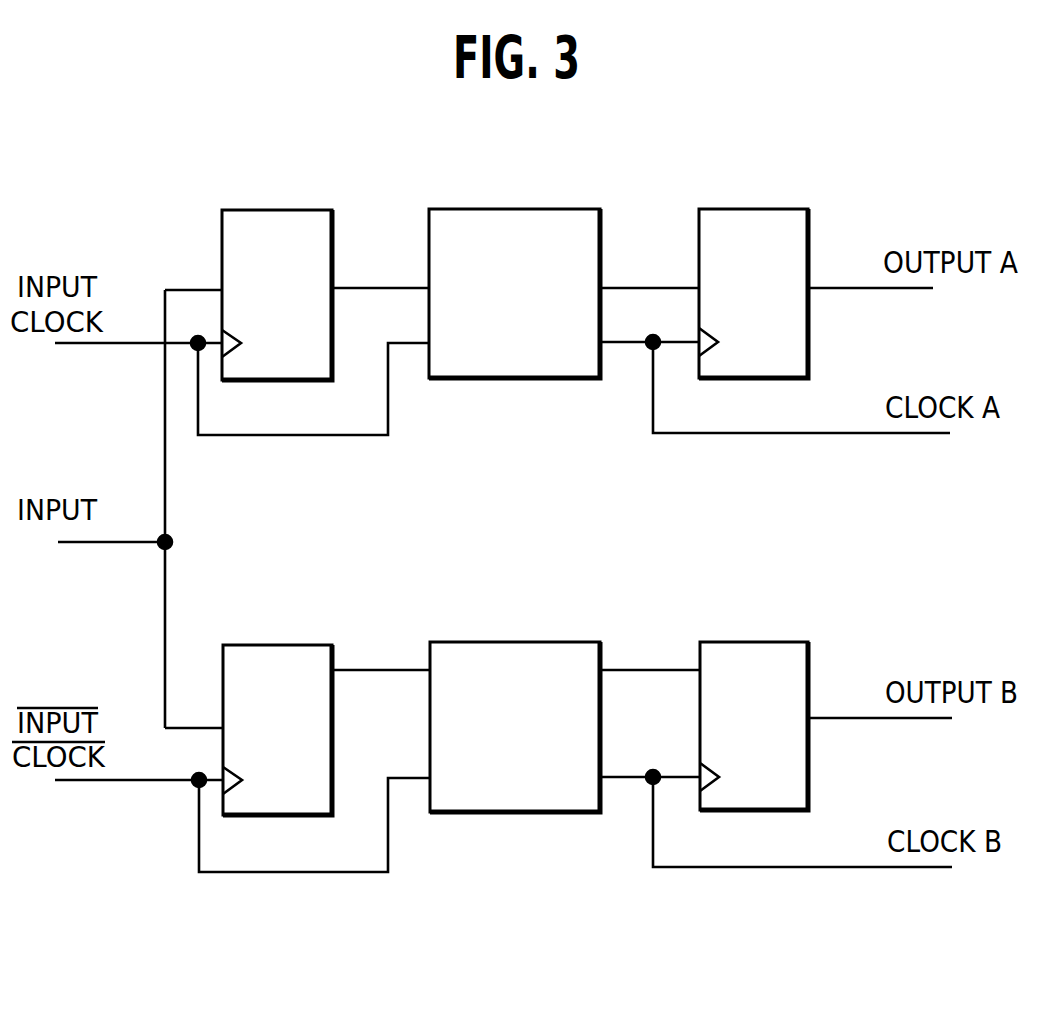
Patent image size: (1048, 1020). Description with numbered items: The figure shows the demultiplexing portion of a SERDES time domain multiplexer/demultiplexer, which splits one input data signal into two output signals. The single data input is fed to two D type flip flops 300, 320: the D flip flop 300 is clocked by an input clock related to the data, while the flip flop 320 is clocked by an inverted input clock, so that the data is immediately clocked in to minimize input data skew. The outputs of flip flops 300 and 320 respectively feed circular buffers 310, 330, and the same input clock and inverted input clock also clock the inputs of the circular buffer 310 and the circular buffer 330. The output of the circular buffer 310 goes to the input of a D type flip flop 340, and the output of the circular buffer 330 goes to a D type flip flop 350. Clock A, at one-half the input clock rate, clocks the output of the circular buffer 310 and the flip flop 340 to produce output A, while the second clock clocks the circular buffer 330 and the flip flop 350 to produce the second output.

The D type flip flop 300 is at (278, 207).
The circular buffer 310 is at (511, 207).
The D type flip flop 340 is at (752, 206).
The D type flip flop 320 is at (276, 641).
The circular buffer 330 is at (511, 640).
The D type flip flop 350 is at (752, 640).